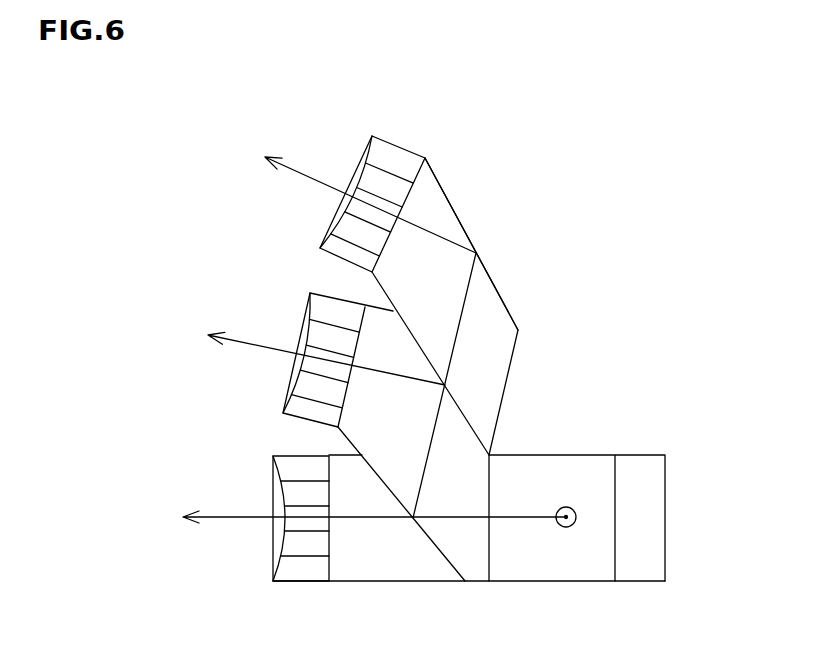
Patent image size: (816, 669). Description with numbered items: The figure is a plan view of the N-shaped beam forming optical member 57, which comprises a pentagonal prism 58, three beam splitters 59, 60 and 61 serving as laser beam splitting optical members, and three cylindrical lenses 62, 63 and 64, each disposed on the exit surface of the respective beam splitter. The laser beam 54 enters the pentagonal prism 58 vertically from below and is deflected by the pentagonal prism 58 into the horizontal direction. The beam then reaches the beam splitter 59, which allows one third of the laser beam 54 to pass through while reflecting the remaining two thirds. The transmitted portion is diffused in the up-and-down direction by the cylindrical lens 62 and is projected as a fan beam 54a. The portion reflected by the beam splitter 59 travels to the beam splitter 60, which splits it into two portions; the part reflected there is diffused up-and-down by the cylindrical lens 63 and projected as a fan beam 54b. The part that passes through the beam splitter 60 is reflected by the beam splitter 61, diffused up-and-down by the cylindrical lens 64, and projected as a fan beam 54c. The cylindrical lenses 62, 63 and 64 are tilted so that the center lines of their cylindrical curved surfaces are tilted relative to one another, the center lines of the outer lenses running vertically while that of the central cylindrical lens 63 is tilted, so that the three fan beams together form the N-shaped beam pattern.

The laser beam 54 is at (537, 517).
The fan beam 54a is at (230, 518).
The fan beam 54b is at (245, 338).
The fan beam 54c is at (303, 168).
The N-shaped beam forming optical member 57 is at (525, 248).
The pentagonal prism 58 is at (562, 455).
The beam splitter 59 is at (384, 582).
The beam splitter 60 is at (450, 432).
The beam splitter 61 is at (450, 195).
The cylindrical lens 62 is at (287, 582).
The cylindrical lens 63 is at (323, 292).
The cylindrical lens 64 is at (400, 147).